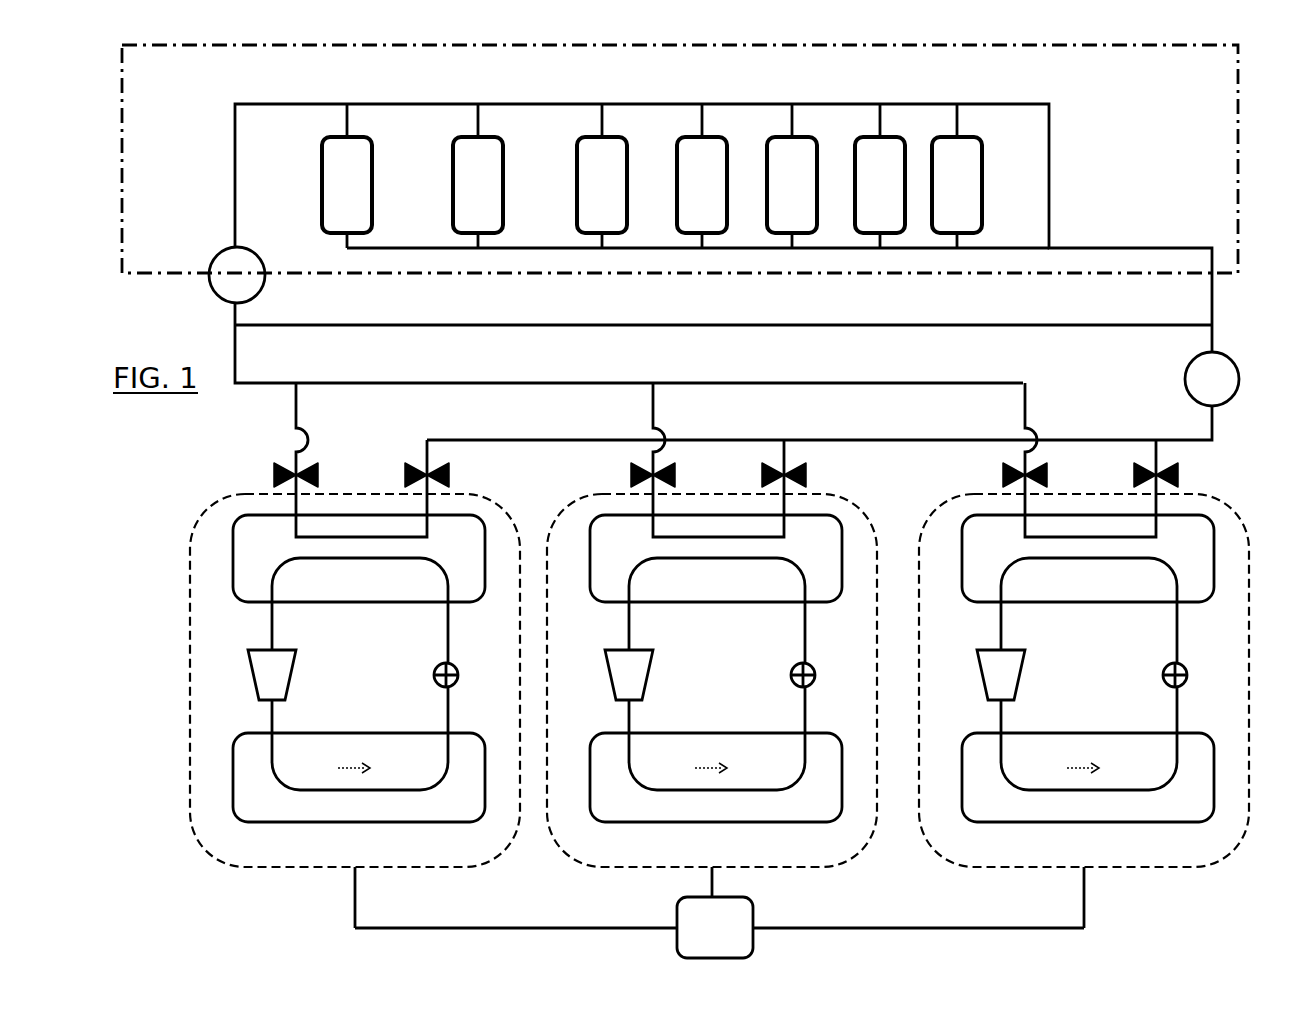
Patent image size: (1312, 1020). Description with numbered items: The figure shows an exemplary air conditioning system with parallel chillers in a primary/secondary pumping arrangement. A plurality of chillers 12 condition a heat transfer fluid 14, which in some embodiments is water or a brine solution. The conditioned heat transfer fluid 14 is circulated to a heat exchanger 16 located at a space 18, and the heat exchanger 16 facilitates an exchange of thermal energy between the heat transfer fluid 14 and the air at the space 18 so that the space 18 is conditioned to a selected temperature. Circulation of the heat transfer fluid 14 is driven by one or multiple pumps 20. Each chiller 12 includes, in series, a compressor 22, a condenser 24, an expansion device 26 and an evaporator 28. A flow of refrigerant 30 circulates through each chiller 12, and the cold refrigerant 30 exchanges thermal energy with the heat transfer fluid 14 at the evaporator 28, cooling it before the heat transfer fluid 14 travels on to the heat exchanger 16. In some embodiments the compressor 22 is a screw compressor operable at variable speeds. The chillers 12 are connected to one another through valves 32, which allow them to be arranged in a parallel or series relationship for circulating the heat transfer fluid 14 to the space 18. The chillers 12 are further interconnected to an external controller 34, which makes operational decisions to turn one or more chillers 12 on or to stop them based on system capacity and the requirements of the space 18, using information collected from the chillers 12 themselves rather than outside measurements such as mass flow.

The chiller 12 is at (187, 675).
The heat transfer fluid 14 is at (1215, 442).
The heat exchanger 16 is at (323, 185).
The space 18 is at (1237, 147).
The pump 20 is at (207, 267).
The compressor 22 is at (273, 687).
The condenser 24 is at (393, 743).
The expansion device 26 is at (430, 673).
The evaporator 28 is at (360, 583).
The refrigerant 30 is at (698, 770).
The valve 32 is at (267, 467).
The controller 34 is at (672, 913).